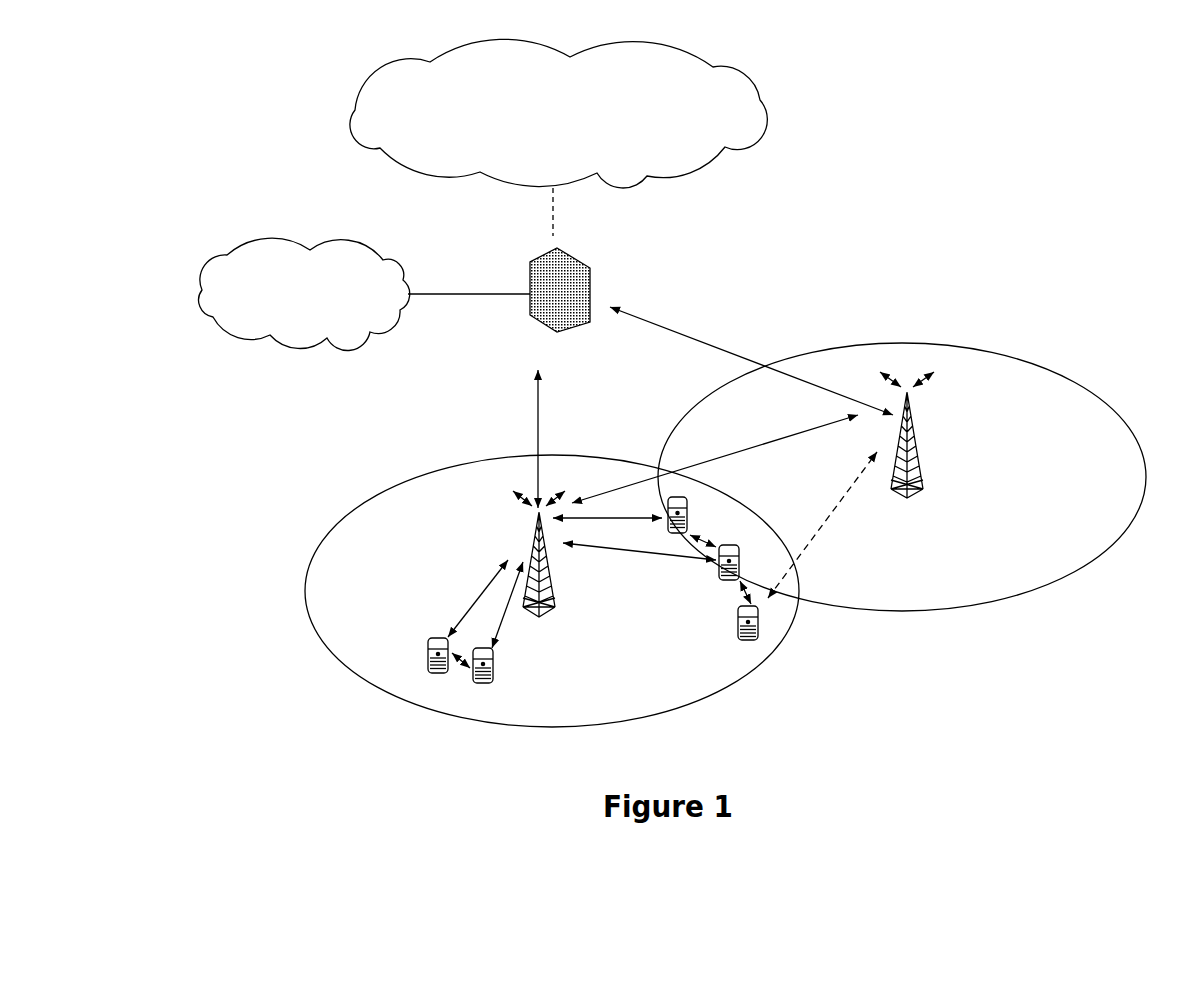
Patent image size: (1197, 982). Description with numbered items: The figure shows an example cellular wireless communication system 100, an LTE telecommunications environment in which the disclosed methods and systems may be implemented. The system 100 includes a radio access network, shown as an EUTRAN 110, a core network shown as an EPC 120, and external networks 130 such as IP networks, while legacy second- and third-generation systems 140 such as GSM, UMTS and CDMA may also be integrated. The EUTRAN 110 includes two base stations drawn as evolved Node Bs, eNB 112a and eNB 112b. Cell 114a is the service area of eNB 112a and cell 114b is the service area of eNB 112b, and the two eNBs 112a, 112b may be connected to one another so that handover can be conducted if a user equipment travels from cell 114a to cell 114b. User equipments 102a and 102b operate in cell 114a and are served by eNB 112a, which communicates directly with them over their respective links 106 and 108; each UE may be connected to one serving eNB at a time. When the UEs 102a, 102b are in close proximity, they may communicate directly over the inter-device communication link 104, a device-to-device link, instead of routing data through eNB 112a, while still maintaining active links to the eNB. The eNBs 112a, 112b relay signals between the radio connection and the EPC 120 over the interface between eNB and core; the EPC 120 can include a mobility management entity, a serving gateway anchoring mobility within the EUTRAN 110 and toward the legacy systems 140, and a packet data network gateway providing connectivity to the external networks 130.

The cellular wireless communication system 100 is at (988, 98).
The external networks 130 is at (470, 40).
The 2G/3G systems 140 is at (228, 255).
The core network (EPC) 120 is at (590, 281).
The radio access network (EUTRAN) 110 is at (415, 477).
The cell 114a is at (355, 658).
The cell 114b is at (1105, 538).
The eNB (base station) 112a is at (532, 538).
The eNB (base station) 112b is at (915, 433).
The user equipment 102a is at (430, 645).
The user equipment 102b is at (494, 667).
The inter-device communication link 104 is at (460, 662).
The link between UE 102a and eNB 112a 106 is at (484, 590).
The link between UE 102b and eNB 112a 108 is at (499, 630).